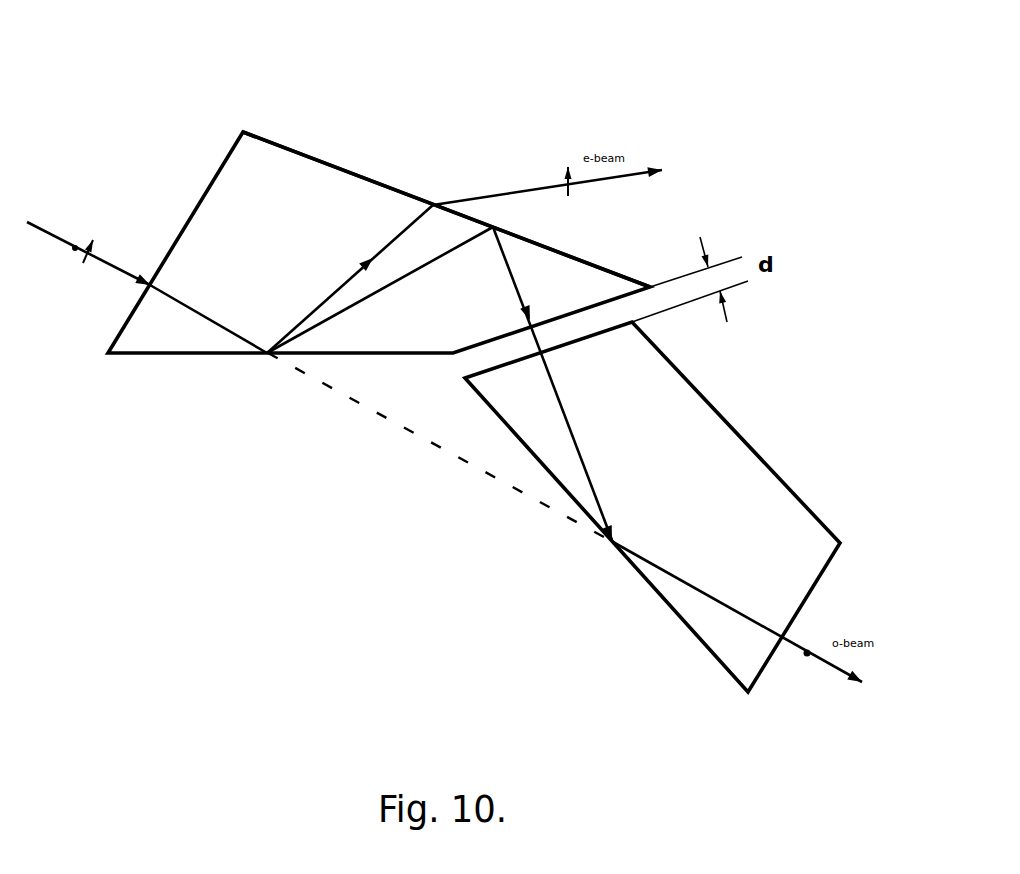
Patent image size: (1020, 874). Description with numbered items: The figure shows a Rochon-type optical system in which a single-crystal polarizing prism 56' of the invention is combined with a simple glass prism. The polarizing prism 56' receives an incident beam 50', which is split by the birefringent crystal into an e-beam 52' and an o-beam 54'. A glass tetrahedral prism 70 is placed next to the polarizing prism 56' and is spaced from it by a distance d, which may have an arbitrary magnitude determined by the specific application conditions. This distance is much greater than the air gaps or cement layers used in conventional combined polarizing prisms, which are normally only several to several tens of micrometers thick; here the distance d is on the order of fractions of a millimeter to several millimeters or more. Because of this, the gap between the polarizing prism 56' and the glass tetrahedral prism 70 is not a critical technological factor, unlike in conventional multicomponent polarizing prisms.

The incident beam 50' is at (147, 249).
The e-beam 52' is at (446, 192).
The o-beam 54' is at (439, 383).
The prism 56' is at (425, 190).
The glass tetrahedral prism 70 is at (802, 449).